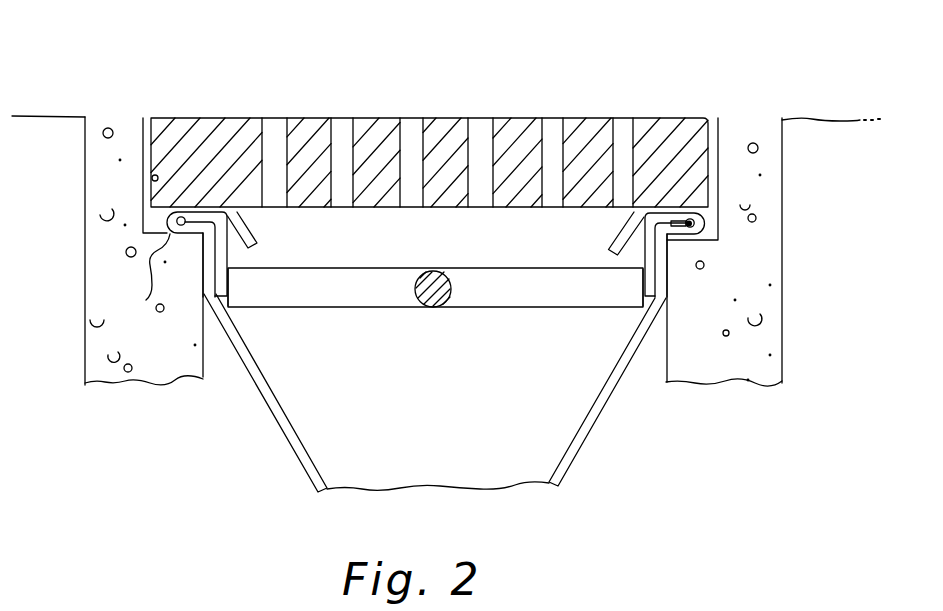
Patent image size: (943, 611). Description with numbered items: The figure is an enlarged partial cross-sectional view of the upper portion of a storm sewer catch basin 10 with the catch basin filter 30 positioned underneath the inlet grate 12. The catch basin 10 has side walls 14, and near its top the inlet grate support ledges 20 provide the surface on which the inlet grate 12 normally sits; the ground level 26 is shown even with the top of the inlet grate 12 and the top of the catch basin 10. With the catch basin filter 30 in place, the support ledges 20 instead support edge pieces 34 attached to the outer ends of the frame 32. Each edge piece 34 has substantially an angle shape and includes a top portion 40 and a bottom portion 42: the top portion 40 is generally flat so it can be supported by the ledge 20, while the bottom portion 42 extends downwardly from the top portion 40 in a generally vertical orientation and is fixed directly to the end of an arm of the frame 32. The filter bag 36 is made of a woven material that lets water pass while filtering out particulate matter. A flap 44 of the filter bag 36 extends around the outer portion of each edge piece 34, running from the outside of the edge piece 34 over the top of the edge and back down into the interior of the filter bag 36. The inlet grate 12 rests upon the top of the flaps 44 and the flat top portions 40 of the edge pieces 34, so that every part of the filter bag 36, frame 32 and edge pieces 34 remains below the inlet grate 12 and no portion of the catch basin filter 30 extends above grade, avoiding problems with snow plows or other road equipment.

The storm sewer catch basin 10 is at (802, 273).
The inlet grate 12 is at (448, 125).
The side walls 14 is at (128, 380).
The inlet grate support ledges 20 is at (175, 262).
The ground level 26 is at (837, 120).
The catch basin filter 30 is at (243, 418).
The frame 32 is at (513, 298).
The edge pieces 34 is at (227, 246).
The filter bag 36 is at (592, 428).
The top portion 40 is at (197, 222).
The bottom portion 42 is at (221, 277).
The flap 44 is at (256, 231).